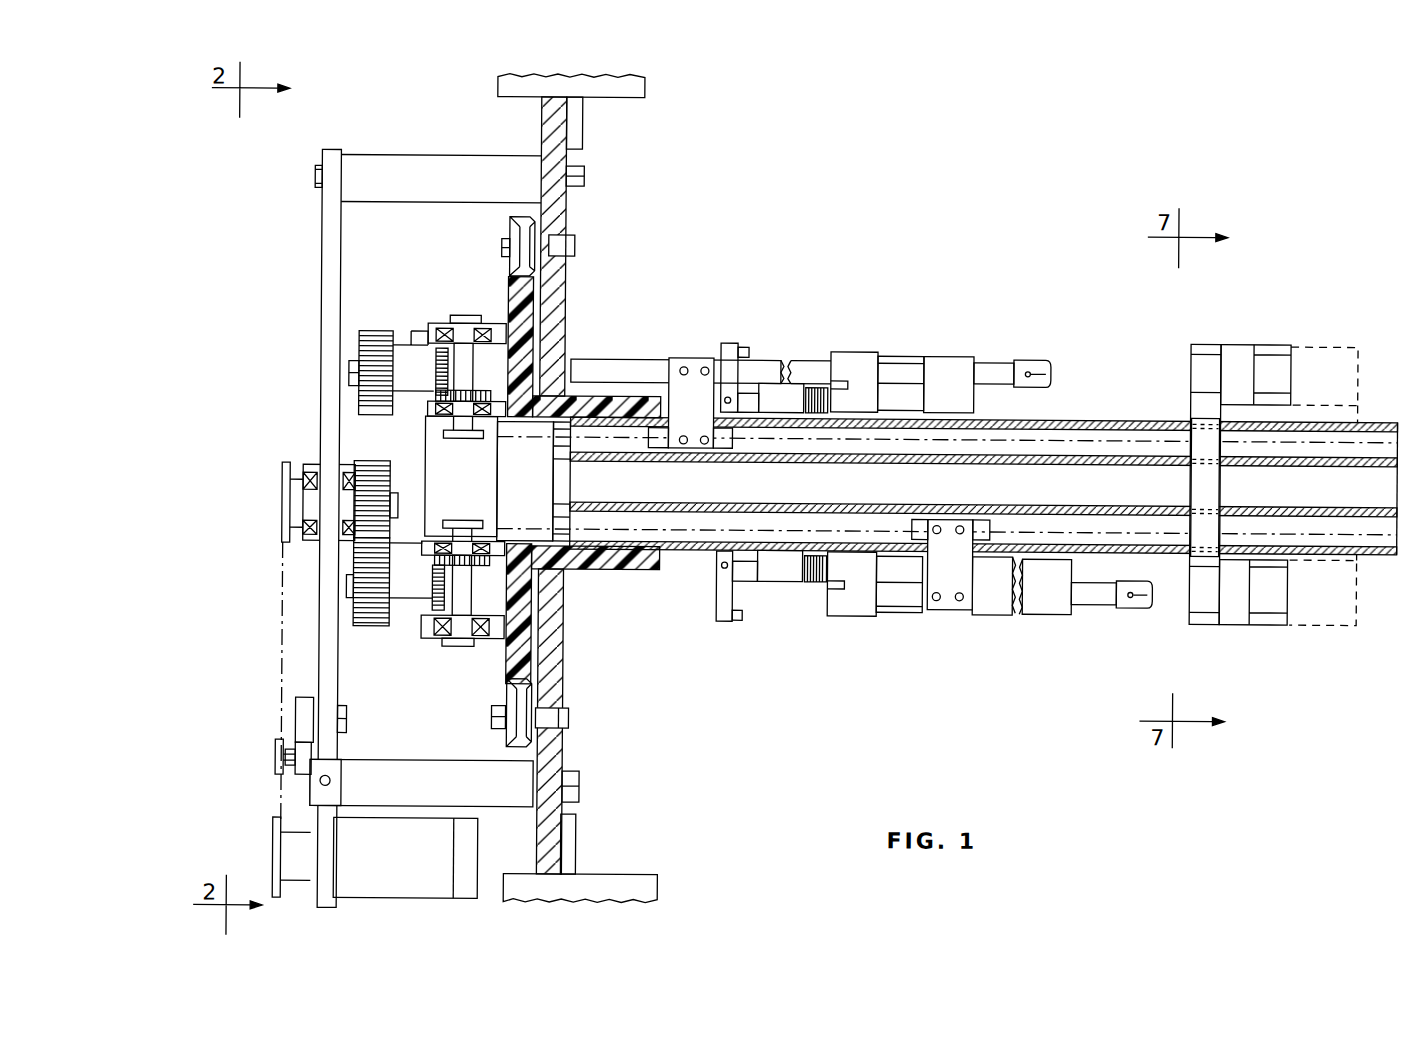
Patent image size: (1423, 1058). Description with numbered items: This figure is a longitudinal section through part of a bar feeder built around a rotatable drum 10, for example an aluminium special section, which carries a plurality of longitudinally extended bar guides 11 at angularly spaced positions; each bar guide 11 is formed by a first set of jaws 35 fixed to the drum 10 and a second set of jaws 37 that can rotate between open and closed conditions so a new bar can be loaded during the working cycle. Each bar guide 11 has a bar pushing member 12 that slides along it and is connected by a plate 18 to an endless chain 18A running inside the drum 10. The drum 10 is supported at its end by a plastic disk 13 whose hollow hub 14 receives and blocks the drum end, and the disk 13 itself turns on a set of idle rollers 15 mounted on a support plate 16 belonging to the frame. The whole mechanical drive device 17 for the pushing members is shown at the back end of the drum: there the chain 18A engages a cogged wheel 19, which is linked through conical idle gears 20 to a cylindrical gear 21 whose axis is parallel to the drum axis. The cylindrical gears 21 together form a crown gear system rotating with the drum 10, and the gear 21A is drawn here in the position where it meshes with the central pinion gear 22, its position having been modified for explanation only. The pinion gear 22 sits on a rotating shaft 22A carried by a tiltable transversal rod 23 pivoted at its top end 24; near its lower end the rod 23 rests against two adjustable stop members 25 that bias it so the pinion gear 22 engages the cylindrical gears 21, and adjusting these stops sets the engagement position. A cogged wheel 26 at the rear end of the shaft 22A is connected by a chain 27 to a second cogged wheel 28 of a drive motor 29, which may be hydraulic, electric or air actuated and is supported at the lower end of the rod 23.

The drum 10 is at (1125, 418).
The bar guide 11 is at (1281, 330).
The bar pushing member 12 is at (850, 351).
The disk 13 is at (530, 328).
The hollow hub 14 is at (603, 571).
The idle rollers 15 is at (518, 232).
The support plate 16 is at (548, 150).
The mechanical drive device 17 is at (280, 326).
The plate 18 is at (692, 358).
The endless chain 18A is at (1080, 438).
The cogged wheel 19 is at (459, 440).
The conical idle gears 20 is at (435, 376).
The cylindrical gear 21 is at (376, 333).
The gear 21A is at (372, 628).
The central pinion gear 22 is at (363, 463).
The rotating shaft 22A is at (343, 508).
The transversal rod 23 is at (323, 666).
The top end 24 is at (316, 178).
The adjustable stop members 25 is at (318, 798).
The cogged wheel 26 is at (285, 478).
The chain 27 is at (283, 623).
The second cogged wheel 28 is at (278, 845).
The drive motor 29 is at (421, 868).
The first set of jaws 35 is at (1236, 355).
The set of jaws 37 is at (1275, 375).